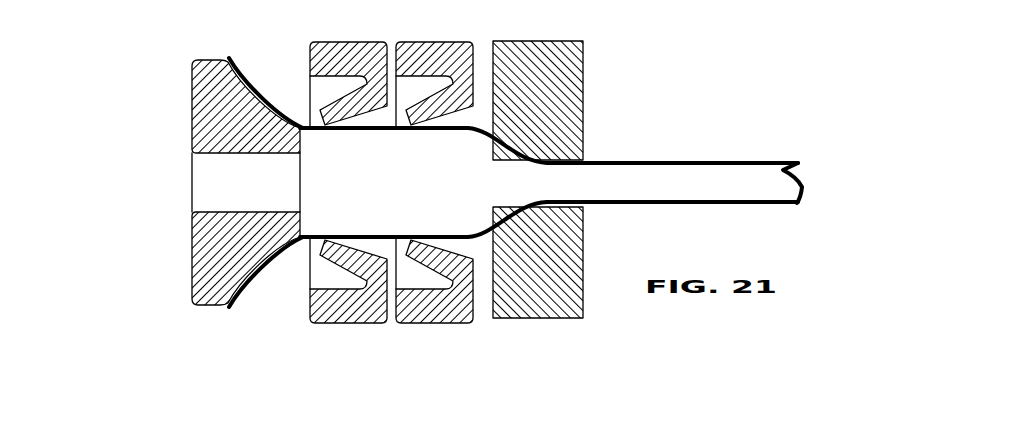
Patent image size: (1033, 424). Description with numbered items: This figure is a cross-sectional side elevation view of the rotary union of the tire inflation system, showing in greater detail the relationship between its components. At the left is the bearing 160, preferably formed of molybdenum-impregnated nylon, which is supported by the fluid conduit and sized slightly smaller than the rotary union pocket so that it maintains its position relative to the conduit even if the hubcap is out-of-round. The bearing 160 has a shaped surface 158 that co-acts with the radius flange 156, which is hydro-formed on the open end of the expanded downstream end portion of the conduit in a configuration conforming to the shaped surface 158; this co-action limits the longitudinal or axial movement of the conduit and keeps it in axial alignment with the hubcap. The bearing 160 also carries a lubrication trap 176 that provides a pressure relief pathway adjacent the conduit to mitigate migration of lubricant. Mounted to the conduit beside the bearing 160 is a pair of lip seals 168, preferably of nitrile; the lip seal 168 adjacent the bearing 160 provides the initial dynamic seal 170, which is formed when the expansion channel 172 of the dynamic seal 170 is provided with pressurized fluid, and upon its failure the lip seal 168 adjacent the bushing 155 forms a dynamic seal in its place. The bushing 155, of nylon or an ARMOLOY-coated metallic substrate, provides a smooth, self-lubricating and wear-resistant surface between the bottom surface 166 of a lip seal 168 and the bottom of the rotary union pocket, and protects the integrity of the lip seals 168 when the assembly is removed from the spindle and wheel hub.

The bearing 160 is at (184, 118).
The lubrication trap 176 is at (203, 172).
The radius flange 156 is at (240, 70).
The shaped surface 158 is at (240, 272).
The lip seal 168 is at (340, 48).
The dynamic seal 170 is at (312, 245).
The expansion channel 172 is at (398, 280).
The bushing 155 is at (568, 92).
The bottom surface 166 is at (477, 237).